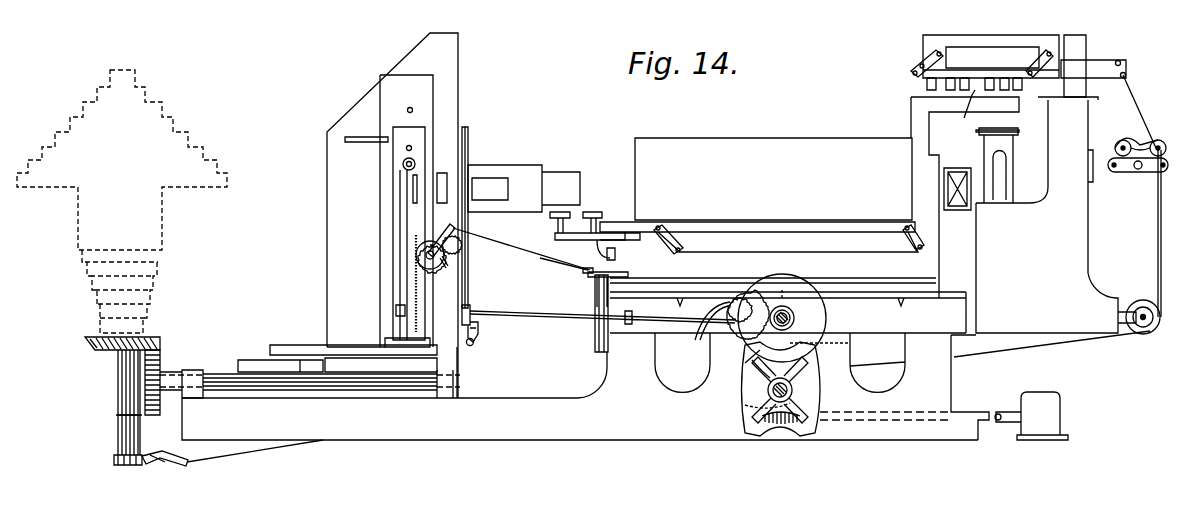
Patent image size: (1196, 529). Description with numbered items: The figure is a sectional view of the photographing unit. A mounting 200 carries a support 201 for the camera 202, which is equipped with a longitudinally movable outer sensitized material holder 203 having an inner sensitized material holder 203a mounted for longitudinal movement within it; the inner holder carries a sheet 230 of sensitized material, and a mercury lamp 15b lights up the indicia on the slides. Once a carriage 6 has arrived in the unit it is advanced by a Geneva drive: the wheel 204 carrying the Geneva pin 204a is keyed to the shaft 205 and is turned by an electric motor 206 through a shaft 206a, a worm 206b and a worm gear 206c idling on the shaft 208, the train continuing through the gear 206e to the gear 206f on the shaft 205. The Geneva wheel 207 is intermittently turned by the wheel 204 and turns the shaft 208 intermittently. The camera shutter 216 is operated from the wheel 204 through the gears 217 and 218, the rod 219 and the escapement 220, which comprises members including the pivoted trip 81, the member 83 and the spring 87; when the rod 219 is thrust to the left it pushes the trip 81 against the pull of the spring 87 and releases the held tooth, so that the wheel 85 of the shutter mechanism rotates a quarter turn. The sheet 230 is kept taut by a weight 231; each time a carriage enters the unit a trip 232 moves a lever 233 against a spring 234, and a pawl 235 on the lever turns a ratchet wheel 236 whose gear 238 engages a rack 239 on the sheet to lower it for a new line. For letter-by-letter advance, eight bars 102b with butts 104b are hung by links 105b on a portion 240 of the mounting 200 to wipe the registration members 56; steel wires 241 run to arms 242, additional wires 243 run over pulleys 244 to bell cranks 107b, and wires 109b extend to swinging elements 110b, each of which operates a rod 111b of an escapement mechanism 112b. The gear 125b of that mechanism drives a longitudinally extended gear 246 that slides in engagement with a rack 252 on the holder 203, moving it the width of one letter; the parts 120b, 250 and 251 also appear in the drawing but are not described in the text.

The escapement mechanism 112b is at (72, 91).
The dashed stack trunk / feed column 120b is at (95, 292).
The gear 125b is at (85, 340).
The gear 246 is at (162, 352).
The feed rod 250 is at (213, 372).
The rod 111b is at (118, 377).
The swinging elements 110b is at (118, 416).
The wires 109b is at (118, 443).
The bell cranks 107b is at (148, 461).
The wires 243 is at (262, 455).
The conveyor belt 251 is at (310, 396).
The rack 252 is at (306, 360).
The mounting 200 is at (528, 432).
The support 201 is at (402, 65).
The outer sensitized material holder 203 is at (379, 162).
The inner sensitized material holder 203a is at (427, 132).
The sheet of sensitised material 230 is at (405, 178).
The wheel 85 is at (468, 130).
The camera 202 is at (491, 156).
The camera shutter 216 is at (480, 182).
The lever 233 is at (457, 226).
The pawl 235 is at (420, 250).
The spring 234 is at (456, 246).
The gear 238 is at (416, 262).
The ratchet wheel 236 is at (437, 264).
The weight 231 is at (396, 310).
The rack 239 is at (418, 296).
The pivoted trip 81 is at (480, 313).
The escapement member 83 is at (461, 318).
The escapement 220 is at (482, 331).
The spring 87 is at (470, 346).
The trip 232 is at (590, 282).
The carriage 6 is at (808, 146).
The gear 206f is at (783, 277).
The gear 217 is at (752, 297).
The shaft 205 is at (800, 300).
The wheel 204 is at (820, 316).
The gear 218 is at (698, 336).
The rod 219 is at (650, 320).
The gear 206e is at (830, 345).
The Geneva pin 204a is at (748, 370).
The worm gear 206c is at (742, 409).
The shaft 208 is at (796, 392).
The Geneva wheel 207 is at (768, 432).
The worm 206b is at (800, 435).
The shaft 206a is at (930, 427).
The electric motor 206 is at (1062, 408).
The pulleys 244 is at (1150, 333).
The bars 102b is at (985, 75).
The butts 104b is at (923, 91).
The links 105b is at (928, 62).
The registration members 56 is at (961, 113).
The mercury lamp 15b is at (1000, 180).
The portion of the mounting 240 is at (1080, 35).
The steel wires 241 is at (1126, 78).
The arms 242 is at (1124, 140).